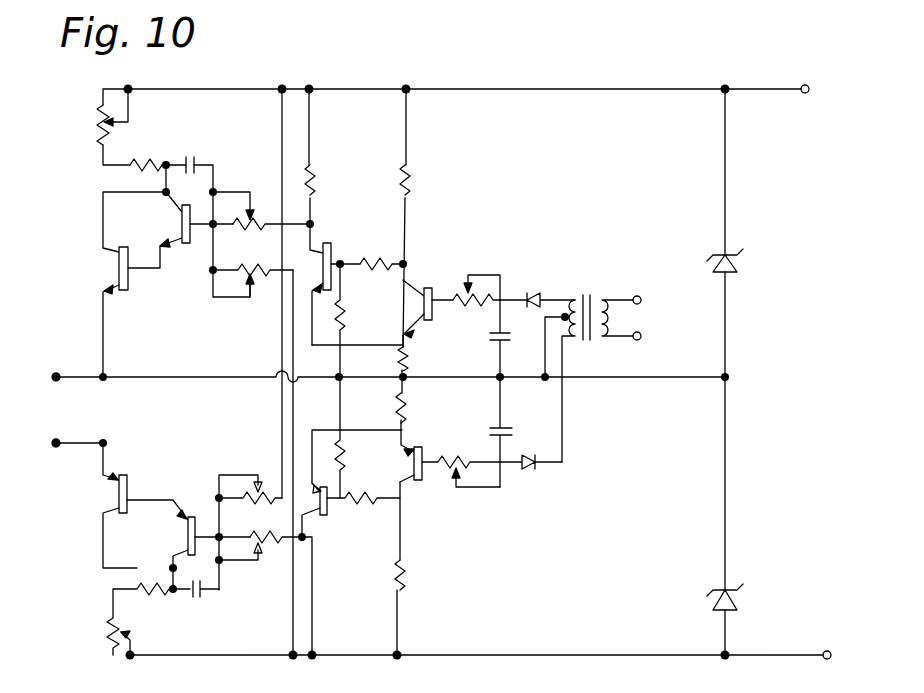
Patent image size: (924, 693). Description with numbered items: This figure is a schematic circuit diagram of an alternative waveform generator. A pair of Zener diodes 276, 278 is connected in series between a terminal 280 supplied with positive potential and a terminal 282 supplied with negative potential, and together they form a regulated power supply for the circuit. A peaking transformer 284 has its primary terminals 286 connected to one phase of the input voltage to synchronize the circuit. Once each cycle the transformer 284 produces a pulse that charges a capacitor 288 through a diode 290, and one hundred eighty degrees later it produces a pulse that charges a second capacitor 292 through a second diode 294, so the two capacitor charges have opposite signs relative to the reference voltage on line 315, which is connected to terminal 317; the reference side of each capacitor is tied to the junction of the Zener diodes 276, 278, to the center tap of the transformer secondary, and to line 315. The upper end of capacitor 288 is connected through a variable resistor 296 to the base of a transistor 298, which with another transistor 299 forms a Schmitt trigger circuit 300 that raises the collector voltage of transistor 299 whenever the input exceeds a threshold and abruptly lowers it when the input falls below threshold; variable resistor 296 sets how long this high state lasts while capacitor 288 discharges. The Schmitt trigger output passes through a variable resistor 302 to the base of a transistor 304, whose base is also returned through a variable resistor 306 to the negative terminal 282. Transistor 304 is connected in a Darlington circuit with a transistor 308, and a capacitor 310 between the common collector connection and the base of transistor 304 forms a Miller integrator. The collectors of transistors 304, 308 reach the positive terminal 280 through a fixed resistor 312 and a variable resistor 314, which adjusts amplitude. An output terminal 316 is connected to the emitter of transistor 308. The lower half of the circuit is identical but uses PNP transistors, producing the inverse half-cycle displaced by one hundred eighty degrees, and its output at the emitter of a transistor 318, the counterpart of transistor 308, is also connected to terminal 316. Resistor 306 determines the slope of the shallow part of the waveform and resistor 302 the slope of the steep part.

The Zener diode 276 is at (735, 258).
The Zener diode 278 is at (733, 590).
The terminal 280 is at (806, 87).
The terminal 282 is at (828, 651).
The peaking transformer 284 is at (592, 296).
The primary terminals 286 is at (645, 326).
The capacitor 288 is at (490, 337).
The diode 290 is at (527, 290).
The second capacitor 292 is at (490, 428).
The second diode 294 is at (530, 470).
The variable resistor 296 is at (456, 288).
The transistor 298 is at (428, 286).
The transistor 299 is at (331, 250).
The Schmitt trigger circuit 300 is at (397, 316).
The variable resistor 302 is at (257, 205).
The transistor 304 is at (183, 245).
The variable resistor 306 is at (262, 280).
The transistor 308 is at (117, 272).
The capacitor 310 is at (200, 160).
The fixed resistor 312 is at (143, 163).
The variable resistor 314 is at (98, 128).
The line 315 is at (182, 358).
The output terminal 316 is at (56, 442).
The terminal 317 is at (54, 374).
The transistor 318 is at (129, 478).